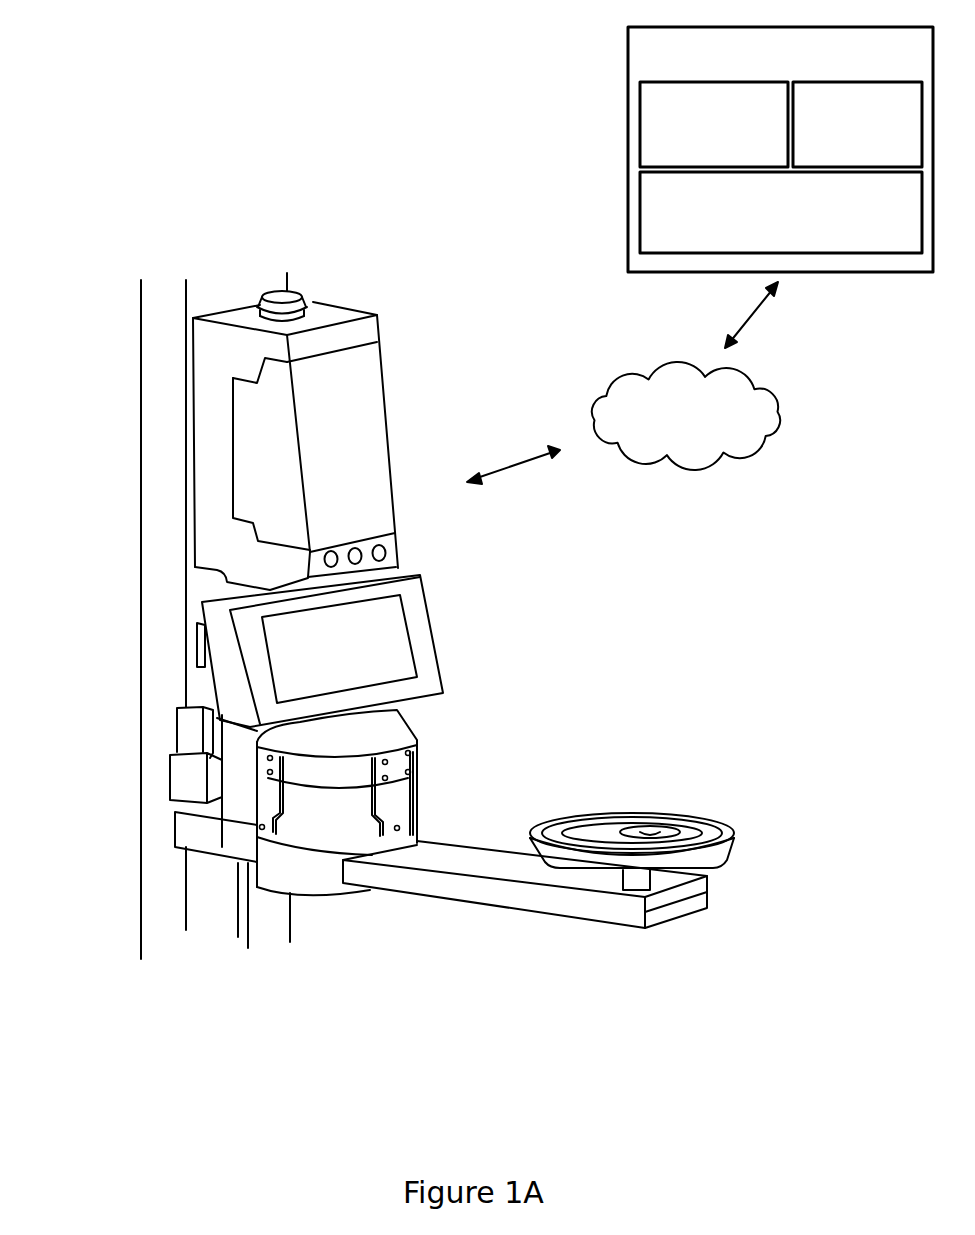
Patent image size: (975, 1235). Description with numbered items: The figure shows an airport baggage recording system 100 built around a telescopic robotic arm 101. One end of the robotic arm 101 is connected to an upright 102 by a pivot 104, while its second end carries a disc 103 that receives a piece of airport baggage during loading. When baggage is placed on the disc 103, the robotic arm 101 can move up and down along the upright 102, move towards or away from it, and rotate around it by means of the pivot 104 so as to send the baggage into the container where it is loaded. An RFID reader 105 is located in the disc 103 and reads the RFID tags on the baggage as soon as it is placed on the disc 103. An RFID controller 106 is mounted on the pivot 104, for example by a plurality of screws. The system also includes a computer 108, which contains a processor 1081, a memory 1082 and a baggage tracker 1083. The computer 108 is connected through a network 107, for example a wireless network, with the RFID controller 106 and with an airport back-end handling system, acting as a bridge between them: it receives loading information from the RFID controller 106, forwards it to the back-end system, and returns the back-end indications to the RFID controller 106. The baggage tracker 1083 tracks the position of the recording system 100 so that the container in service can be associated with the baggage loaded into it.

The airport baggage recording system 100 is at (226, 70).
The telescopic robotic arm 101 is at (522, 893).
The upright 102 is at (156, 631).
The disc 103 is at (560, 817).
The pivot 104 is at (240, 838).
The RFID reader 105 is at (667, 830).
The RFID controller 106 is at (367, 427).
The network 107 is at (658, 445).
The computer 108 is at (863, 65).
The processor 1081 is at (685, 152).
The memory 1082 is at (885, 152).
The baggage tracker 1083 is at (810, 239).